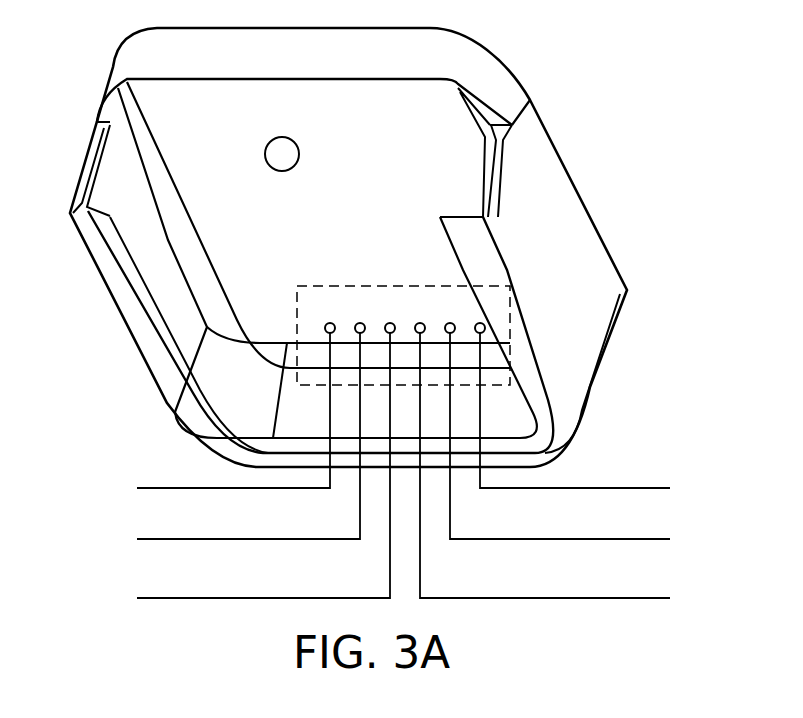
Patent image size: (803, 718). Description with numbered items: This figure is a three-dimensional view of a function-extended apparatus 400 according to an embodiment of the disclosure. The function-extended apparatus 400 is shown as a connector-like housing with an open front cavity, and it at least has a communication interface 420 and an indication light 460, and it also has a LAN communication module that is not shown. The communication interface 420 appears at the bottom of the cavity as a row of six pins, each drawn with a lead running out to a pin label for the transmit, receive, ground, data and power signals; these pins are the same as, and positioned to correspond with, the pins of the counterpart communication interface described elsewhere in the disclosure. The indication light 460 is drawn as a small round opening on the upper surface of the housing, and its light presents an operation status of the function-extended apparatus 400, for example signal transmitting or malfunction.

The function-extended apparatus 400 is at (543, 240).
The communication interface 420 is at (513, 340).
The indication light 460 is at (300, 148).